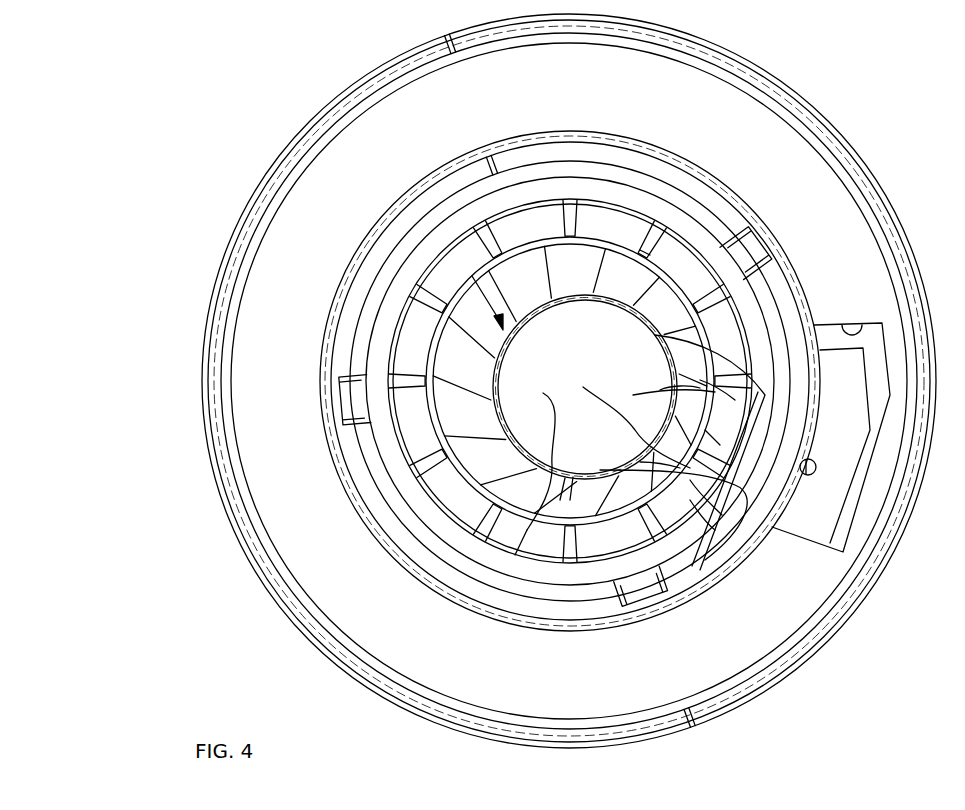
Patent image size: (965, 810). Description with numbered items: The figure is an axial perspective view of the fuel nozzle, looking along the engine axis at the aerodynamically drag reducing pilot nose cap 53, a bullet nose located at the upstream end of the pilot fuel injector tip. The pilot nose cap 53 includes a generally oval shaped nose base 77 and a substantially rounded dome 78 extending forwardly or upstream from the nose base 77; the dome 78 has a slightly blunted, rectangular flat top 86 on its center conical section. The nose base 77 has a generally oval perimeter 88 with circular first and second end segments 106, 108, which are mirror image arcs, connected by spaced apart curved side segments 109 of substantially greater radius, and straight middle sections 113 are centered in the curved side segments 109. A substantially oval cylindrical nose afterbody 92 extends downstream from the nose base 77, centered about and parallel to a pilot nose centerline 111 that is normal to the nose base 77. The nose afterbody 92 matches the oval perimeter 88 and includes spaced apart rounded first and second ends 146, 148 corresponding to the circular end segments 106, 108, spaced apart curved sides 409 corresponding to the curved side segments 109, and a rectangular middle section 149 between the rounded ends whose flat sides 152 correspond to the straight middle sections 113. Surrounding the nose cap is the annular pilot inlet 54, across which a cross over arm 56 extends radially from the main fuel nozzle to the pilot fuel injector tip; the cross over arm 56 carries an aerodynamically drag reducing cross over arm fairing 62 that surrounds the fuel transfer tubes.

The annular pilot inlet 54 is at (712, 262).
The curved sides 409 is at (742, 268).
The rounded first end 146 is at (482, 248).
The flat sides 152 is at (652, 253).
The rectangular middle section 149 is at (600, 300).
The straight middle sections 113 is at (598, 302).
The circular first end segment 106 is at (505, 353).
The curved side segments 109 is at (632, 322).
The pilot nose centerline 111 is at (583, 387).
The circular second end segment 108 is at (683, 420).
The oval perimeter 88 is at (565, 478).
The nose base 77 is at (573, 477).
The flat top 86 is at (660, 460).
The rounded dome 78 is at (662, 390).
The cross over arm 56 is at (723, 388).
The rounded second end 148 is at (715, 437).
The cross over arm fairing 62 is at (700, 520).
The pilot nose cap 53 is at (578, 536).
The nose afterbody 92 is at (530, 540).